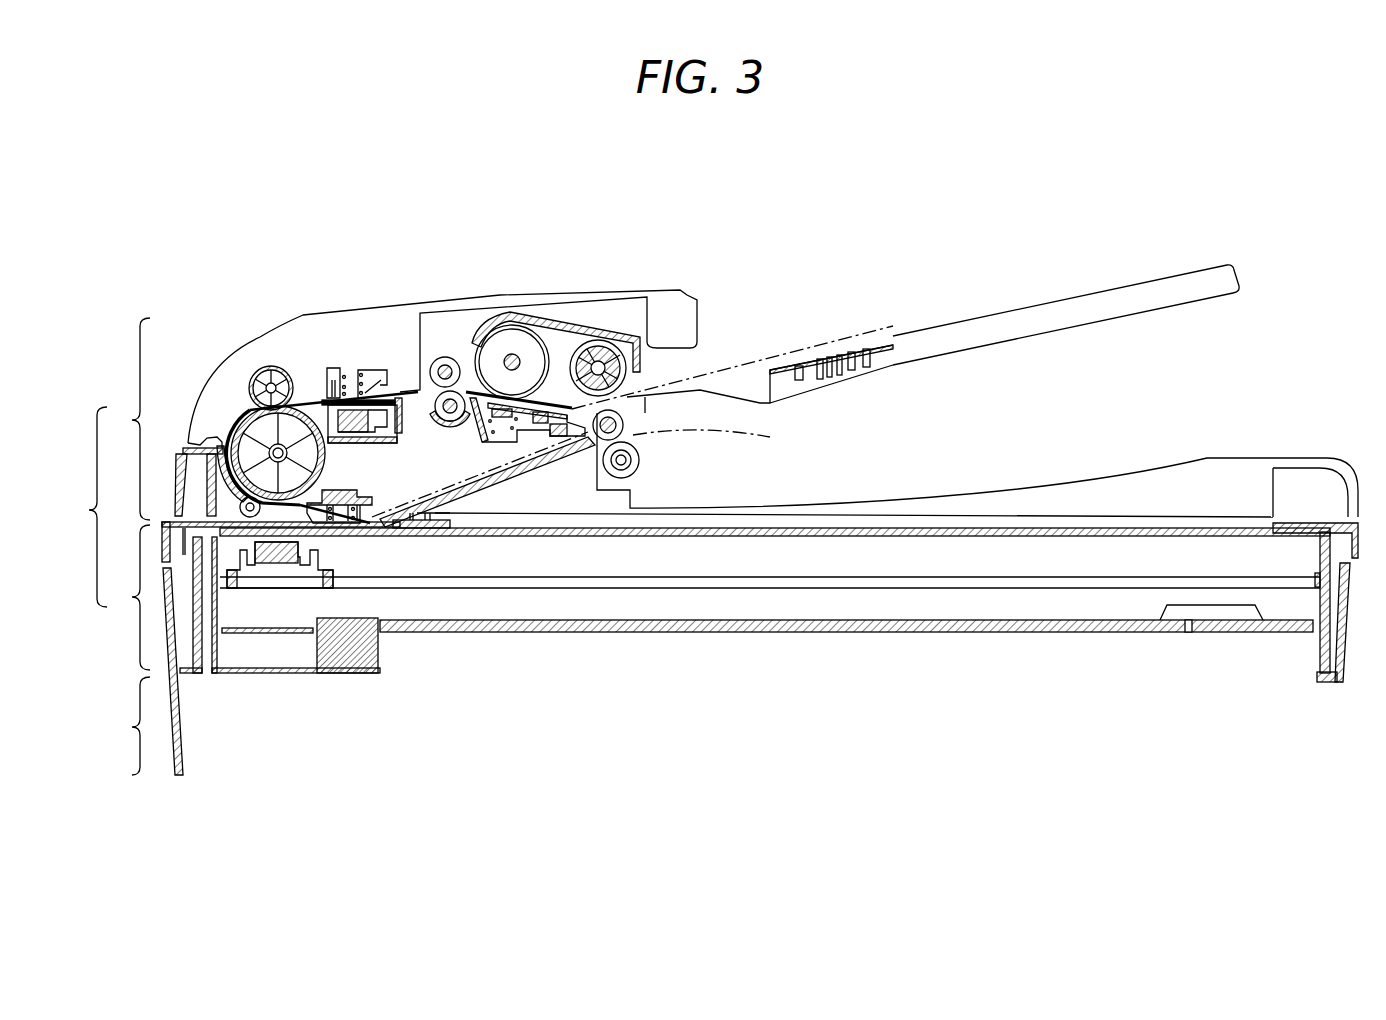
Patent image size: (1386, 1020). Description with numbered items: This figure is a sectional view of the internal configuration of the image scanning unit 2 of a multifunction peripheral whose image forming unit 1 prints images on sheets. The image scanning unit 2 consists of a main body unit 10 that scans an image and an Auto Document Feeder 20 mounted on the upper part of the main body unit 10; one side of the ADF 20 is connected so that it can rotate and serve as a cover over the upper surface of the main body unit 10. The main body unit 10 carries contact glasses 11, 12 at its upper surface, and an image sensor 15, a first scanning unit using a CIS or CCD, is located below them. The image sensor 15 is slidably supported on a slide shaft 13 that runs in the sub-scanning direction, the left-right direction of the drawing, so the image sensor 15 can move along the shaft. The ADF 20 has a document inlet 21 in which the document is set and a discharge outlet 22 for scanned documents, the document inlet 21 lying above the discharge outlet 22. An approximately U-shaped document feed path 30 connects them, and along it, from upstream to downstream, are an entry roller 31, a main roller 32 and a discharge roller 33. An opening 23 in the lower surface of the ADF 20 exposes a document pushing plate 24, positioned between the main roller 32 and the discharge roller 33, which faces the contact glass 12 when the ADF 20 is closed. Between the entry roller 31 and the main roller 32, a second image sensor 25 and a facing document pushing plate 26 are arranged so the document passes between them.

The image forming unit 1 is at (148, 671).
The image scanning unit 2 is at (88, 507).
The main body unit 10 is at (731, 602).
The contact glass 11 is at (650, 538).
The contact glass 12 is at (345, 540).
The slide shaft 13 is at (737, 582).
The image sensor 15 is at (280, 562).
The Auto Document Feeder 20 is at (400, 405).
The document inlet 21 is at (1057, 300).
The discharge outlet 22 is at (1057, 483).
The opening 23 is at (375, 522).
The document pushing plate 24 is at (345, 507).
The image sensor 25 is at (370, 434).
The document pushing plate 26 is at (352, 388).
The document feed path 30 is at (820, 340).
The entry roller 31 is at (447, 356).
The main roller 32 is at (245, 410).
The discharge roller 33 is at (630, 424).